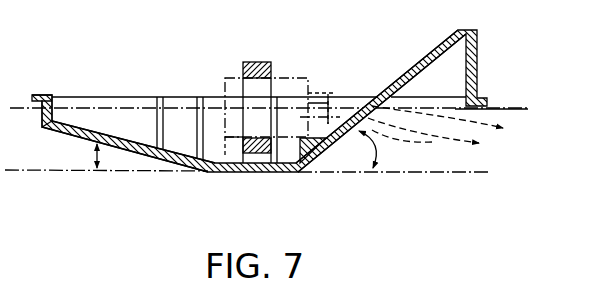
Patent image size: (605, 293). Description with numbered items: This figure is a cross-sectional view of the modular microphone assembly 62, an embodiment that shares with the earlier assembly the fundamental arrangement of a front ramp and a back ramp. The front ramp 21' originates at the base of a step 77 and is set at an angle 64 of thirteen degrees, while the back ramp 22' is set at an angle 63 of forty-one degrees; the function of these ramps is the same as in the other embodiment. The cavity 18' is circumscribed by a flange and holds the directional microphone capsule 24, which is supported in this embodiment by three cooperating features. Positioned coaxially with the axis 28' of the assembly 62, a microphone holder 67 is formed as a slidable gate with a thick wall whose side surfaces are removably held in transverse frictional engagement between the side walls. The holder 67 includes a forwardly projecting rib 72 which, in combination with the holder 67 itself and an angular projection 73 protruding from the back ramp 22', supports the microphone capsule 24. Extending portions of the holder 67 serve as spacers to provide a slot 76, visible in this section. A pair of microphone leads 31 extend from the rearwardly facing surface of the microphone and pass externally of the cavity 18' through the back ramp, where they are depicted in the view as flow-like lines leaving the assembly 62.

The step 77 is at (52, 112).
The front ramp 21' is at (128, 117).
The cavity 18' is at (180, 111).
The angle 64 is at (96, 158).
The forwardly projecting rib 72 is at (226, 136).
The slot 76 is at (253, 157).
The angular projection 73 is at (305, 133).
The microphone holder 67 is at (254, 62).
The directional microphone capsule 24 is at (224, 79).
The back ramp 22' is at (381, 96).
The axis 28' is at (501, 89).
The modular microphone assembly 62 is at (539, 41).
The angle 63 is at (383, 149).
The microphone leads 31 is at (431, 143).